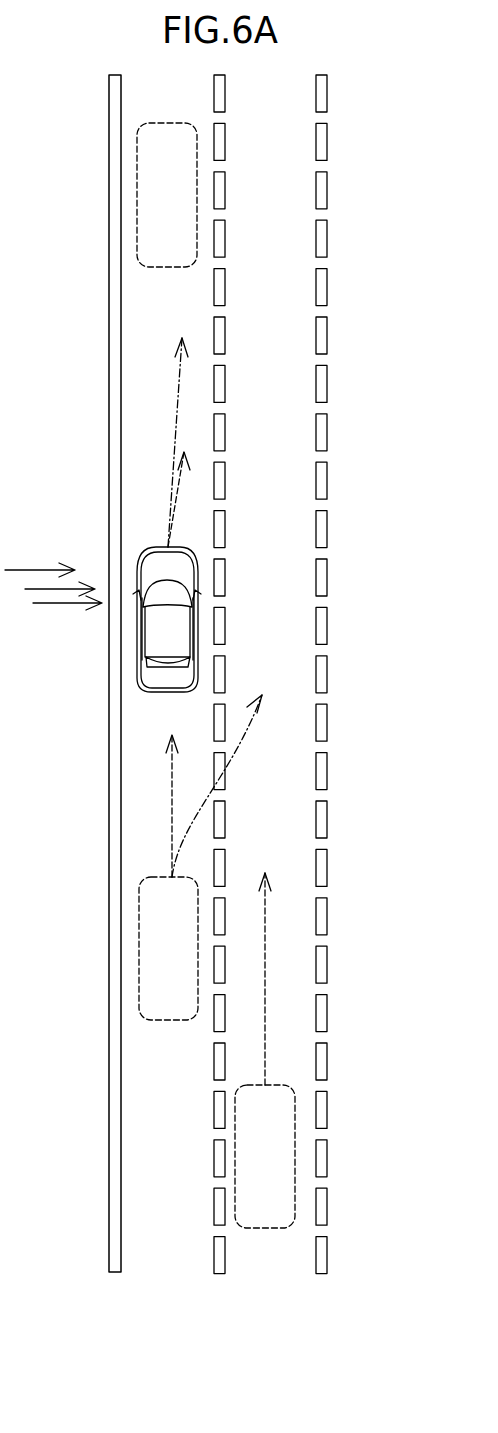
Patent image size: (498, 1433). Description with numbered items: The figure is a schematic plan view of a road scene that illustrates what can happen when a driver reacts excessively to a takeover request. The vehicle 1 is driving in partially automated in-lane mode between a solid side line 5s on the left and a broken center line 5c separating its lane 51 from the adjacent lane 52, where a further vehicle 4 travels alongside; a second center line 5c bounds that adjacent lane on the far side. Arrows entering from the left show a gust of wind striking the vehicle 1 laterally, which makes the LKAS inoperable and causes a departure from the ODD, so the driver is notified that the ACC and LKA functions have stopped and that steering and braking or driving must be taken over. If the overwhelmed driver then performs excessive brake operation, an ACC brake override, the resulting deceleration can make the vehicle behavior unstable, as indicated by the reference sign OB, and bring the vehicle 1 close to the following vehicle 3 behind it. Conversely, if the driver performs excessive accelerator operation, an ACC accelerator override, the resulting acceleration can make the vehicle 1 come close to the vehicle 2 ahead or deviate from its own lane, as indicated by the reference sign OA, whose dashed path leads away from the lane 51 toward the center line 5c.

The vehicle 1 is at (137, 653).
The vehicle ahead 2 is at (137, 204).
The following vehicle 3 is at (140, 957).
The adjacent-lane vehicle 4 is at (295, 1175).
The side line 5s is at (110, 1252).
The center line 5c is at (215, 1250).
The first lane 51 is at (165, 1247).
The second lane 52 is at (268, 1245).
The reference sign OA is at (177, 392).
The reference sign OB is at (180, 495).